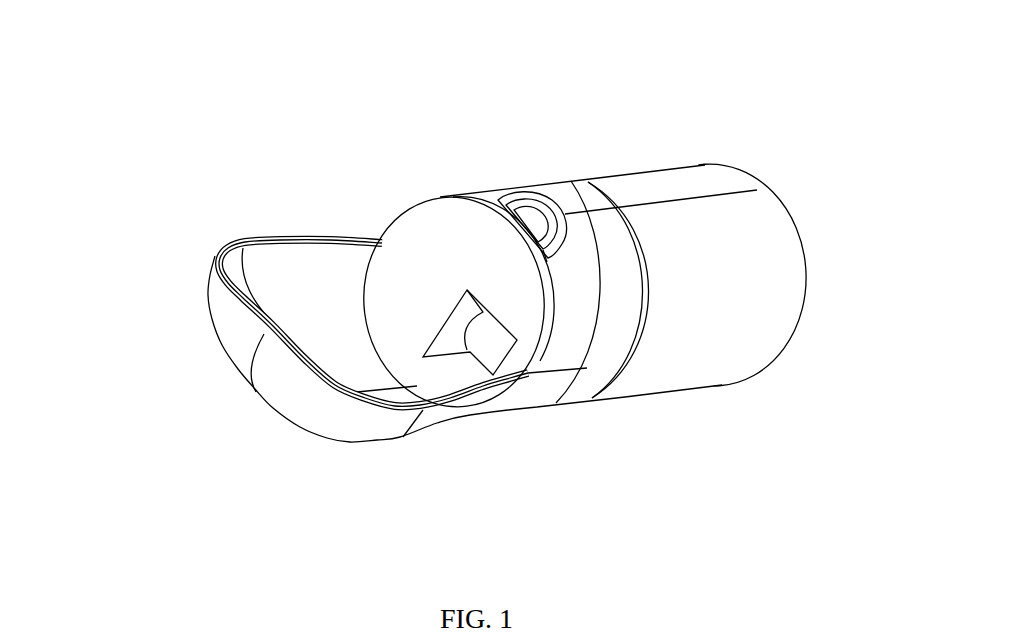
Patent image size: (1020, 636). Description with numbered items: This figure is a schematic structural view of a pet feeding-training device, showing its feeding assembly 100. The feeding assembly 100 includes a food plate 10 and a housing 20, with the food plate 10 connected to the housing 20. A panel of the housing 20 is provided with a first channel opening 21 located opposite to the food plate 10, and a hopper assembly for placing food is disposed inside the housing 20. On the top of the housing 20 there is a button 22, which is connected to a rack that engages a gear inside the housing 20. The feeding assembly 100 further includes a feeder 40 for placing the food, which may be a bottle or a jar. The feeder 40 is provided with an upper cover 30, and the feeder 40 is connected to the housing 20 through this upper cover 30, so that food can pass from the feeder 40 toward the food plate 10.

The food plate 10 is at (312, 273).
The feeding assembly 100 is at (223, 251).
The housing 20 is at (490, 203).
The first channel opening 21 is at (455, 360).
The button 22 is at (547, 225).
The upper cover 30 is at (630, 313).
The feeder 40 is at (737, 216).